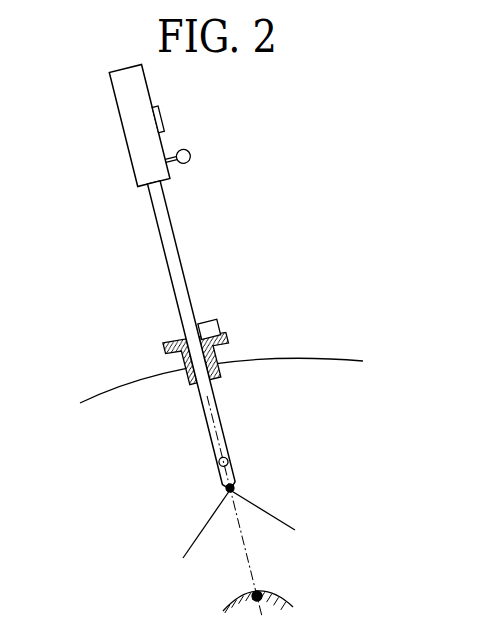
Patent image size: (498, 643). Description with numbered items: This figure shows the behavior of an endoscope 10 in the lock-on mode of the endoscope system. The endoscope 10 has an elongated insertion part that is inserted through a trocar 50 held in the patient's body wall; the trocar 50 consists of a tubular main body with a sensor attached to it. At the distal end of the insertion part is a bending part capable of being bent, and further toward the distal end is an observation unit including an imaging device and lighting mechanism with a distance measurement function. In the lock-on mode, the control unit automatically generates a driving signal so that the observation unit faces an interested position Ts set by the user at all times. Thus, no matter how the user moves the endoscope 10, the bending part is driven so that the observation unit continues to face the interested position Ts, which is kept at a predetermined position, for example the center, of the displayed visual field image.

The endoscope 10 is at (206, 339).
The trocar 50 is at (254, 334).
The interested position Ts is at (263, 590).